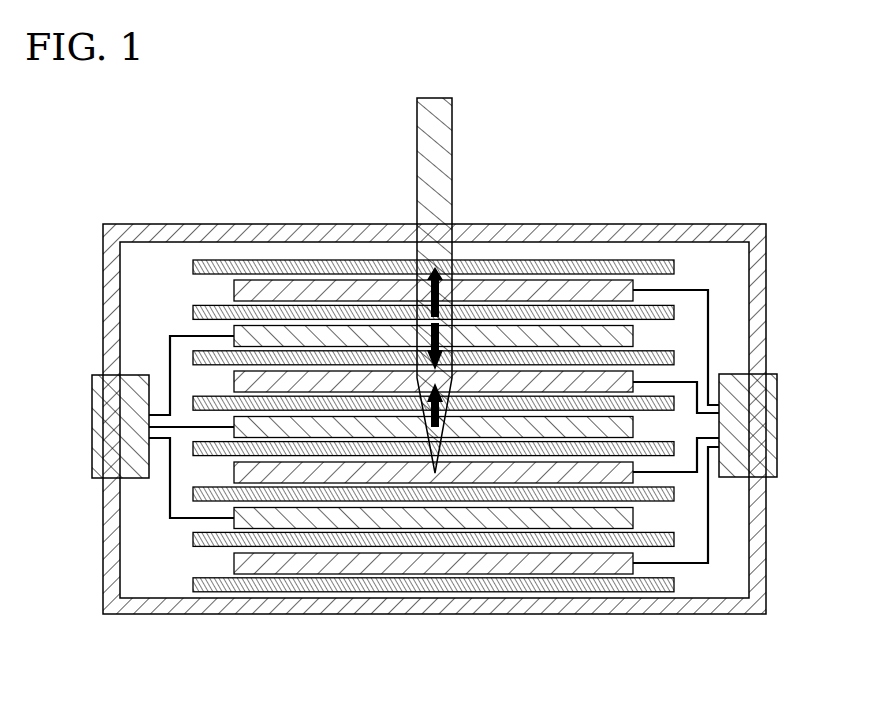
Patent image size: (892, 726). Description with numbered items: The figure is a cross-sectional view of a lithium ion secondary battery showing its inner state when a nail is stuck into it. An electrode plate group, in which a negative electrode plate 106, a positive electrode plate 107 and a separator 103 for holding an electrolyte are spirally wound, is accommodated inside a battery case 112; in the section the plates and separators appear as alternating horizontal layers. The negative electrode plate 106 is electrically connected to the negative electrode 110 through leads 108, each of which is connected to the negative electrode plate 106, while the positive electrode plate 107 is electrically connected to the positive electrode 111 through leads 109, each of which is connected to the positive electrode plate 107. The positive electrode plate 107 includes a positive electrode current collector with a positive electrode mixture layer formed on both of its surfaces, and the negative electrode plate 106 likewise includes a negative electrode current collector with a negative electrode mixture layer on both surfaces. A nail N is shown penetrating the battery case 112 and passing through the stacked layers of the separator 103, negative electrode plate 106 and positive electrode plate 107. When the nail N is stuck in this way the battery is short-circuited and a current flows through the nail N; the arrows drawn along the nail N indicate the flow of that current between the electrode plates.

The separator 103 is at (233, 265).
The negative electrode plate 106 is at (606, 334).
The positive electrode plate 107 is at (527, 290).
The leads 108 is at (181, 518).
The leads 109 is at (708, 323).
The negative electrode 110 is at (115, 407).
The positive electrode 111 is at (758, 408).
The battery case 112 is at (438, 606).
The nail N is at (430, 133).